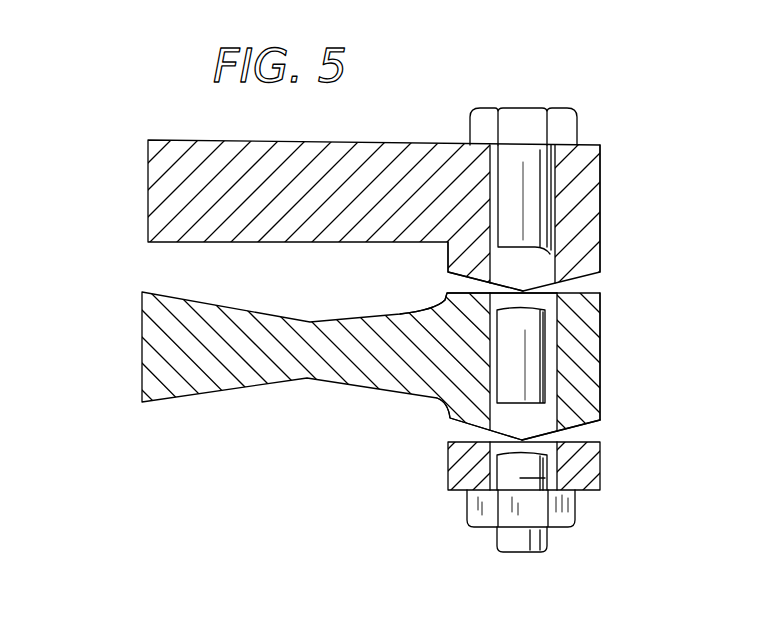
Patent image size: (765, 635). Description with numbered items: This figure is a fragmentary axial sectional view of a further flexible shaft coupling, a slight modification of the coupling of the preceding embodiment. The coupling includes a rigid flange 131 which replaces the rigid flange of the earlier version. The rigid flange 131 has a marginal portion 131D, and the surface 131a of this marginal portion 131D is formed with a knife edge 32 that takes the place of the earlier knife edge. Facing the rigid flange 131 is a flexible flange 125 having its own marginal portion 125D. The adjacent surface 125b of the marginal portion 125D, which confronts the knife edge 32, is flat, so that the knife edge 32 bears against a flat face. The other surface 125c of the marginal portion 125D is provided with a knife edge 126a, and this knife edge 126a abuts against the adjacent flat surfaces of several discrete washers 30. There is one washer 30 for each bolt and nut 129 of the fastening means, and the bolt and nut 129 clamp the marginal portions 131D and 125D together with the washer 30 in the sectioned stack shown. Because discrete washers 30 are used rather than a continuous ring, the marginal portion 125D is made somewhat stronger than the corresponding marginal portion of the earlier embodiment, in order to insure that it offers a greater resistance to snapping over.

The rigid flange 131 is at (147, 183).
The marginal portion of rigid flange 131D is at (585, 198).
The surface of marginal portion 131a is at (455, 281).
The knife edge 32 is at (541, 275).
The adjacent surface of marginal portion 125b is at (450, 288).
The marginal portion of flexible flange 125D is at (582, 367).
The flexible flange 125 is at (142, 378).
The knife edge 126a is at (527, 437).
The other surface of marginal portion 125c is at (460, 427).
The discrete washer 30 is at (585, 477).
The nut 129 is at (465, 522).